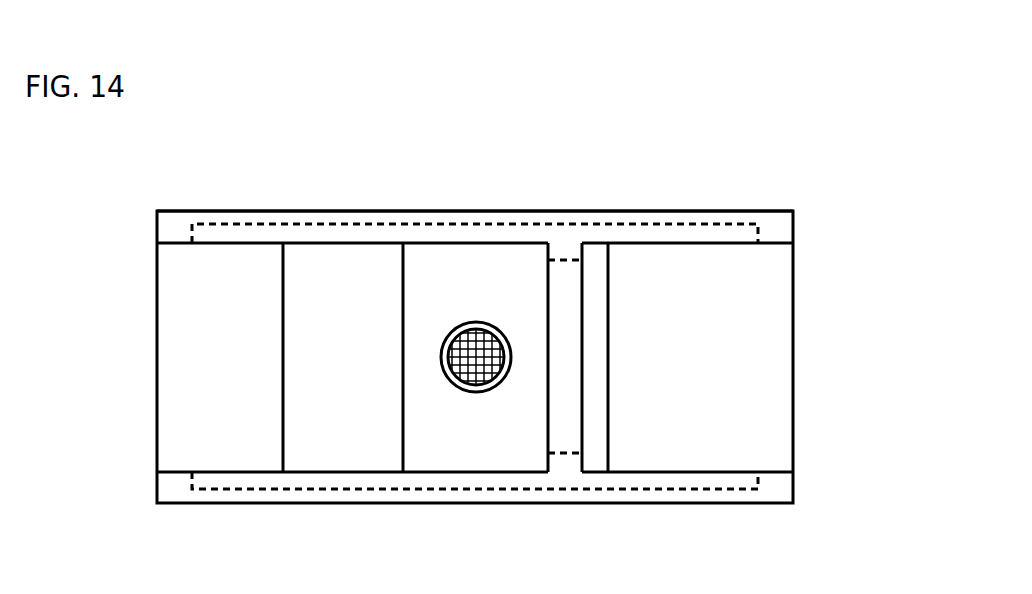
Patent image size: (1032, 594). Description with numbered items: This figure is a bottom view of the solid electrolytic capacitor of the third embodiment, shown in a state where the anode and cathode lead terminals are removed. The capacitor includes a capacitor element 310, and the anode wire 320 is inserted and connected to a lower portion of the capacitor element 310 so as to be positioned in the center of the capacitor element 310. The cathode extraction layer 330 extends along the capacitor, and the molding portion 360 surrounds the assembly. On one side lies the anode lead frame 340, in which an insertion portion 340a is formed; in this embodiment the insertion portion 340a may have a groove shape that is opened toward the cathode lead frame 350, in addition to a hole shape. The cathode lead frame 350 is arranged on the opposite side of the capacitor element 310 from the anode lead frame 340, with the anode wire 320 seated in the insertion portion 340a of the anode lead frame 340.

The capacitor element 310 is at (567, 440).
The anode wire 320 is at (470, 385).
The cathode extraction layer 330 is at (563, 222).
The anode lead frame 340 is at (172, 355).
The insertion portion 340a is at (447, 352).
The cathode lead frame 350 is at (778, 355).
The molding portion 360 is at (672, 222).